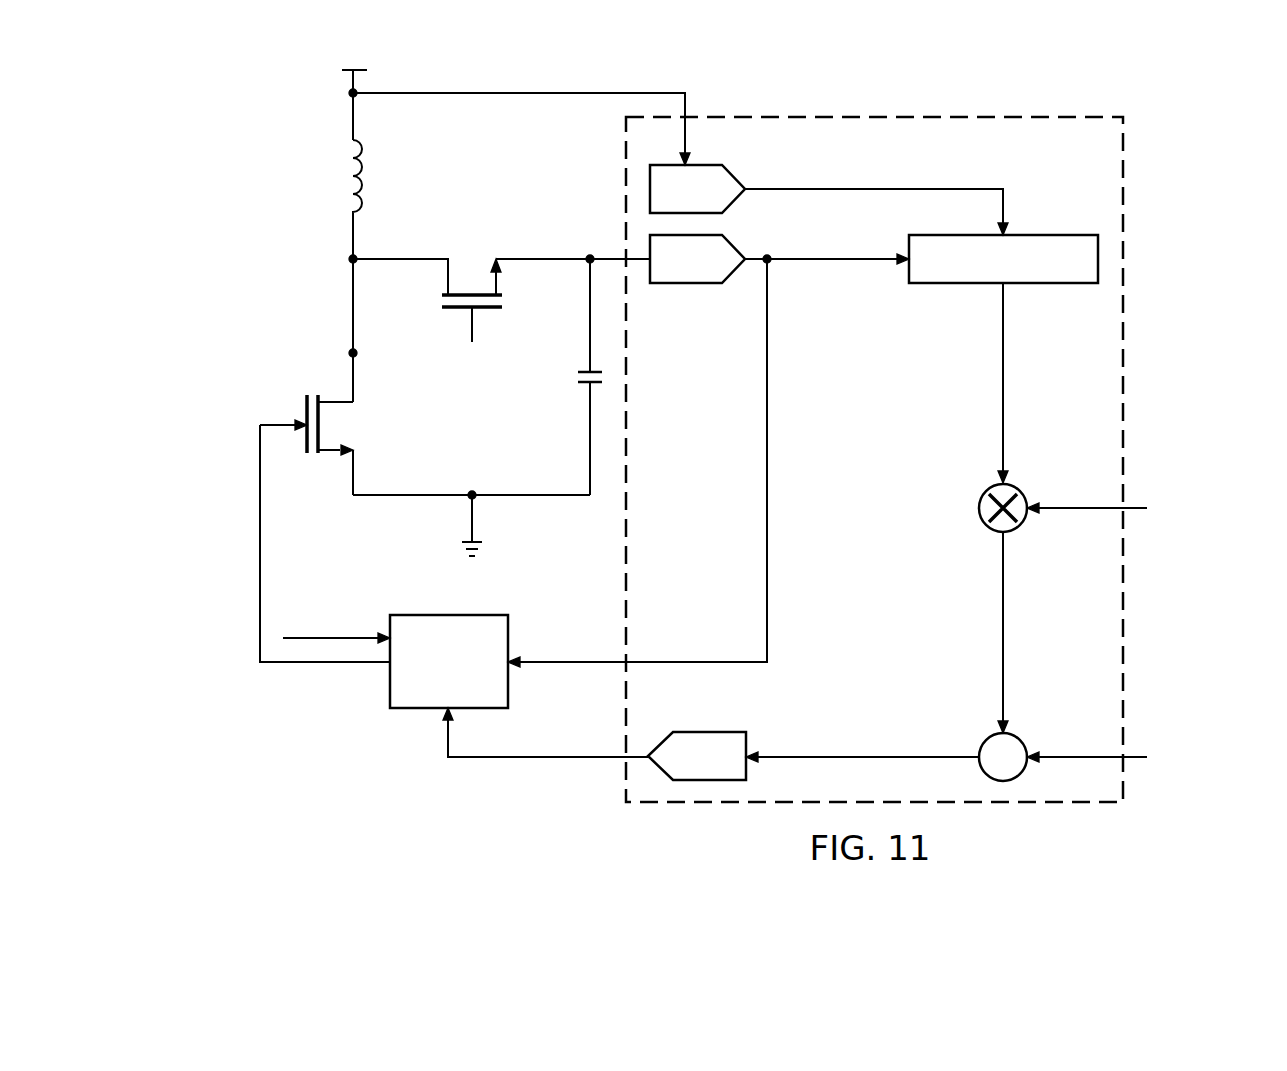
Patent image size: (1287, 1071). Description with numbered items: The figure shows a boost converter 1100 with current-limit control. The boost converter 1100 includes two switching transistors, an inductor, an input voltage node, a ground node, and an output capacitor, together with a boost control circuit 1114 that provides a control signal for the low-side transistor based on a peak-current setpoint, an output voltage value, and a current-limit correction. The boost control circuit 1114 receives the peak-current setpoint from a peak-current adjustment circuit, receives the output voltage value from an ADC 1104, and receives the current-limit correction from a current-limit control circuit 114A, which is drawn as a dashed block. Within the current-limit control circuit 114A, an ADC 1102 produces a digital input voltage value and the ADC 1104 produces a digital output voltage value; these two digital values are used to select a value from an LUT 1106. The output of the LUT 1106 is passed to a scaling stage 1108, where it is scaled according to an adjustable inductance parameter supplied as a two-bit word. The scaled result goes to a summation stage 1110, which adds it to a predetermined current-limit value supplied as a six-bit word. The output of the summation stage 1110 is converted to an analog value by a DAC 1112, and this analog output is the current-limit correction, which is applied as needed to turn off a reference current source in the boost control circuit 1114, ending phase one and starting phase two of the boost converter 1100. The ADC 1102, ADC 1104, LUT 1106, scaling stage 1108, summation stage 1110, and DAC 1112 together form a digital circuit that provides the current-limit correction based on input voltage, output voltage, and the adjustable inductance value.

The boost converter 1100 is at (275, 86).
The I_limit control circuit 114A is at (1010, 108).
The ADC 1102 is at (697, 165).
The ADC 1104 is at (685, 283).
The LUT 1106 is at (1027, 235).
The scaling stage 1108 is at (1018, 525).
The summation stage 1110 is at (1023, 740).
The DAC 1112 is at (746, 767).
The boost control circuit 1114 is at (412, 708).